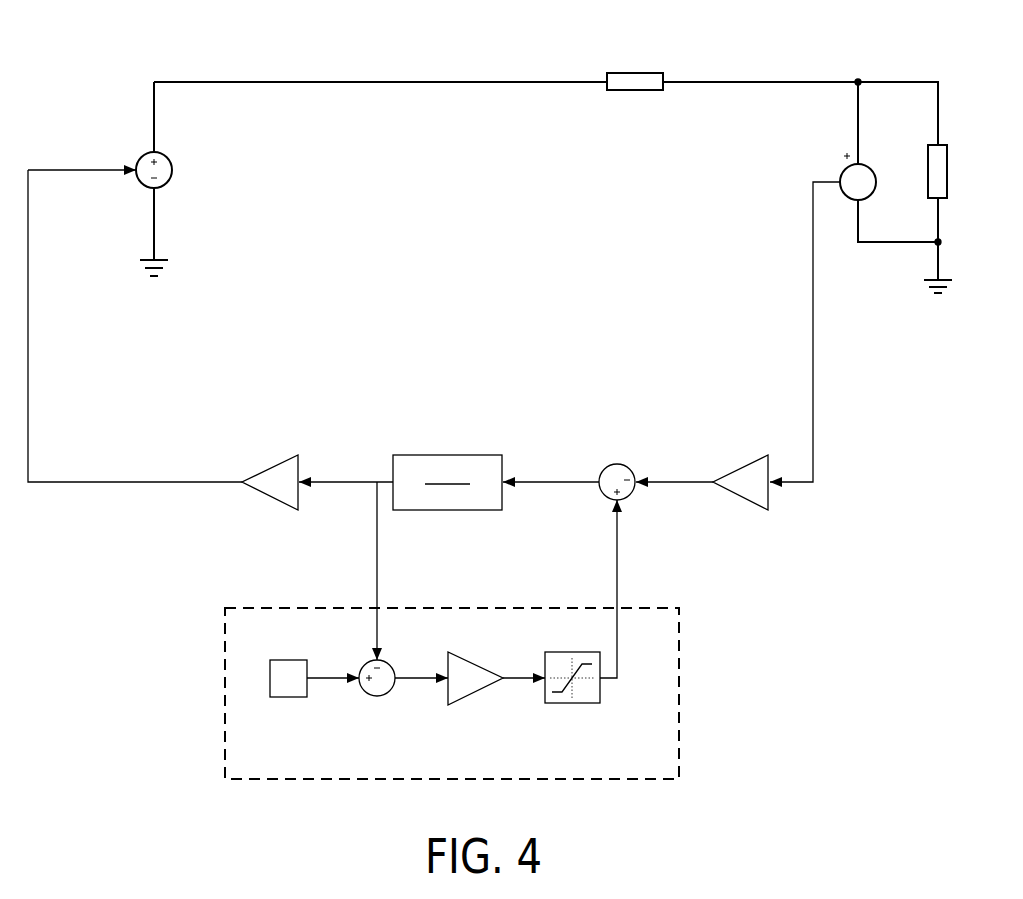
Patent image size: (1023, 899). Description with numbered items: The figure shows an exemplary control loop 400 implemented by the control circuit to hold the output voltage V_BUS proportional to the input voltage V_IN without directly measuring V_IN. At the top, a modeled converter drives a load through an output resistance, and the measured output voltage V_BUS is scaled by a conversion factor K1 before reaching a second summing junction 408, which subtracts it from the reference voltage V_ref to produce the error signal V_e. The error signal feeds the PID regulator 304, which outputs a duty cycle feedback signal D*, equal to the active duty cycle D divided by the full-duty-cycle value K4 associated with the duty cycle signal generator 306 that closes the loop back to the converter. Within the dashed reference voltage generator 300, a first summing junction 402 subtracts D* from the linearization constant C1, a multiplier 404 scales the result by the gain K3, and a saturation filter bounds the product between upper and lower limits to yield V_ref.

The control loop 400 is at (511, 399).
The reference voltage generator 300 is at (452, 677).
The PID regulator 304 is at (452, 455).
The duty cycle signal generator 306 is at (290, 455).
The first summing junction 402 is at (373, 696).
The multiplier 404 is at (458, 652).
The second summing junction 408 is at (615, 464).